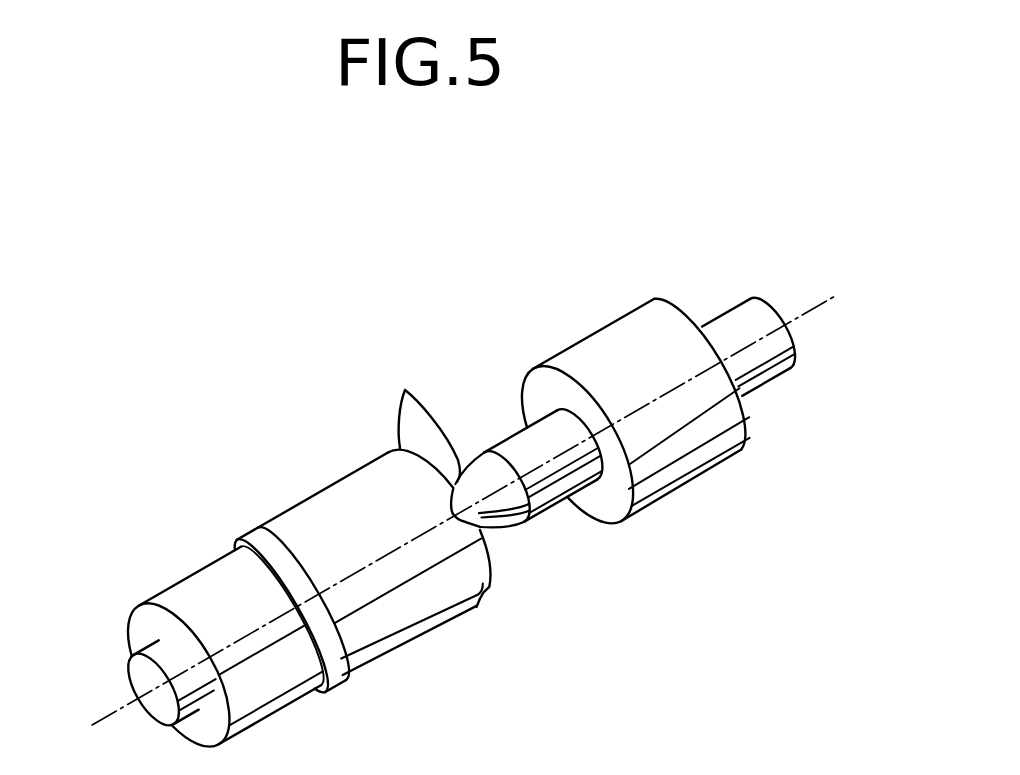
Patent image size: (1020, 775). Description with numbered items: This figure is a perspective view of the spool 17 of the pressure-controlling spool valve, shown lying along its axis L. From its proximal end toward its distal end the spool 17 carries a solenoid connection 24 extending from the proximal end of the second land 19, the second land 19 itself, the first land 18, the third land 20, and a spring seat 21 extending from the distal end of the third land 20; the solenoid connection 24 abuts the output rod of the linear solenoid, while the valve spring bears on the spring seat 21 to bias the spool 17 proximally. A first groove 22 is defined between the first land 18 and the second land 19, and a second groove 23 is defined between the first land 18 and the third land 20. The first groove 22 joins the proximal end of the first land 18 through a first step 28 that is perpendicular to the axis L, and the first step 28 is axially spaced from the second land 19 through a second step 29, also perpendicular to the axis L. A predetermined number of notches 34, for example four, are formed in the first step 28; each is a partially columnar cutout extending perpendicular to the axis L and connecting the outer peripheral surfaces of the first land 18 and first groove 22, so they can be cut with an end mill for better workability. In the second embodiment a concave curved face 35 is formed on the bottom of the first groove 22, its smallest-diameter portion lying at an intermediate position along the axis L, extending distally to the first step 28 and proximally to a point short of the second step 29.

The spool 17 is at (454, 366).
The first land 18 is at (355, 497).
The second land 19 is at (603, 356).
The third land 20 is at (213, 586).
The spring seat 21 is at (143, 652).
The first groove 22 is at (509, 428).
The second groove 23 is at (282, 568).
The solenoid connection 24 is at (746, 312).
The first step 28 is at (505, 567).
The second step 29 is at (606, 510).
The notches 34 is at (494, 648).
The concave curved face 35 is at (508, 529).
The axis L is at (817, 308).